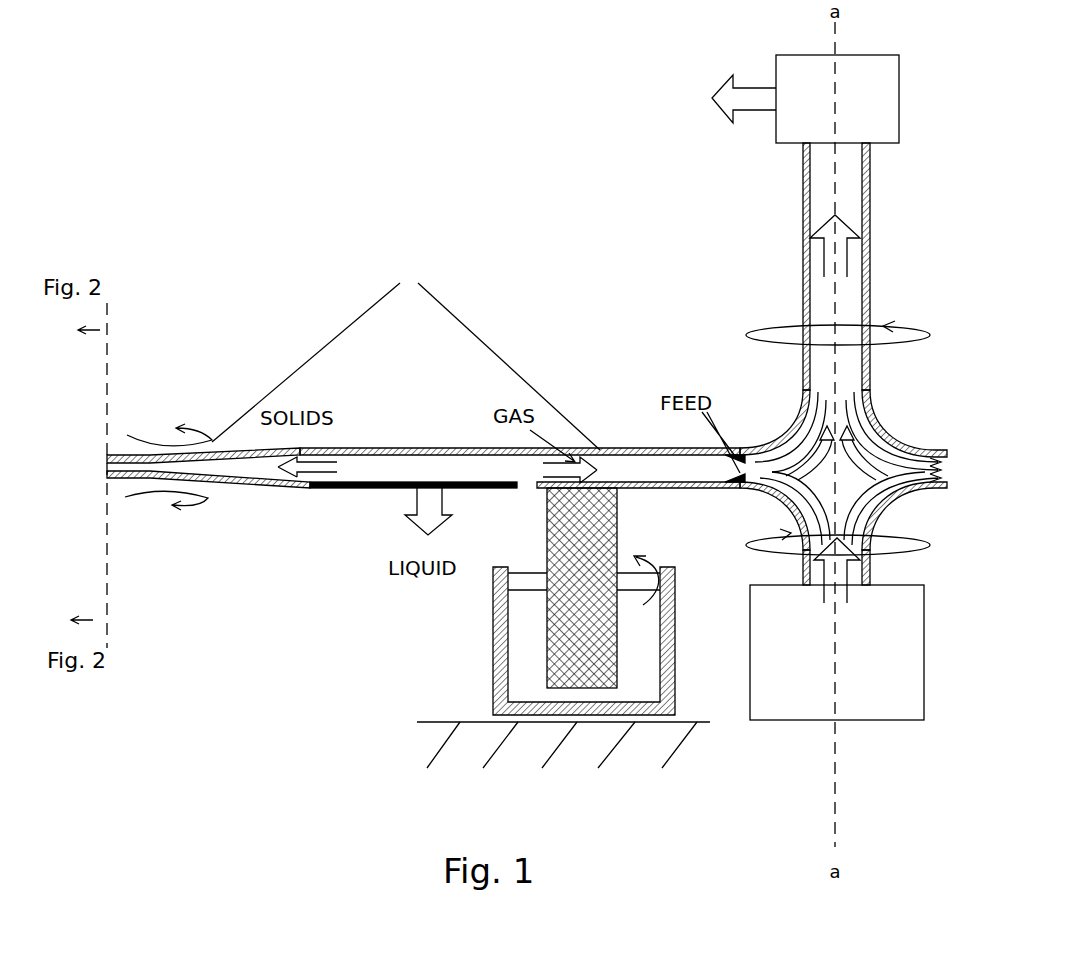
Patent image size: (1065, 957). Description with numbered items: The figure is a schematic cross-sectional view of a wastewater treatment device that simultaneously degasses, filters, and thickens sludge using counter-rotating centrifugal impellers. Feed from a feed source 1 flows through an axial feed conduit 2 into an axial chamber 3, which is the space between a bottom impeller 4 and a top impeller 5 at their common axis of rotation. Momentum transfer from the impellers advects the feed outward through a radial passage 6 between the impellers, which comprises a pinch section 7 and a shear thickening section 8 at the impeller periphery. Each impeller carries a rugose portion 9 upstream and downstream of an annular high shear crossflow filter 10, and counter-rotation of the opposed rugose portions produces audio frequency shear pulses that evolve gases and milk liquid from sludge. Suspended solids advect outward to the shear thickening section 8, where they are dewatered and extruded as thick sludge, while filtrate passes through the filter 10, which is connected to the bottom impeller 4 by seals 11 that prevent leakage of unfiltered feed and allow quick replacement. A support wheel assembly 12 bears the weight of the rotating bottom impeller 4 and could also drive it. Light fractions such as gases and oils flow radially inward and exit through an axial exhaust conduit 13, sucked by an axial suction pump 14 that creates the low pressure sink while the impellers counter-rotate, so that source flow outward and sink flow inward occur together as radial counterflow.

The feed source 1 is at (817, 660).
The axial feed conduit 2 is at (800, 568).
The axial chamber 3 is at (818, 481).
The bottom impeller 4 is at (644, 498).
The top impeller 5 is at (649, 435).
The radial passage 6 is at (472, 468).
The pinch section 7 is at (260, 470).
The shear thickening section 8 is at (158, 467).
The rugose portion 9 is at (406, 369).
The annular high shear crossflow filter 10 is at (380, 488).
The seals 11 is at (320, 488).
The support wheel assembly 12 is at (547, 608).
The axial exhaust conduit 13 is at (803, 210).
The axial suction pump 14 is at (745, 99).